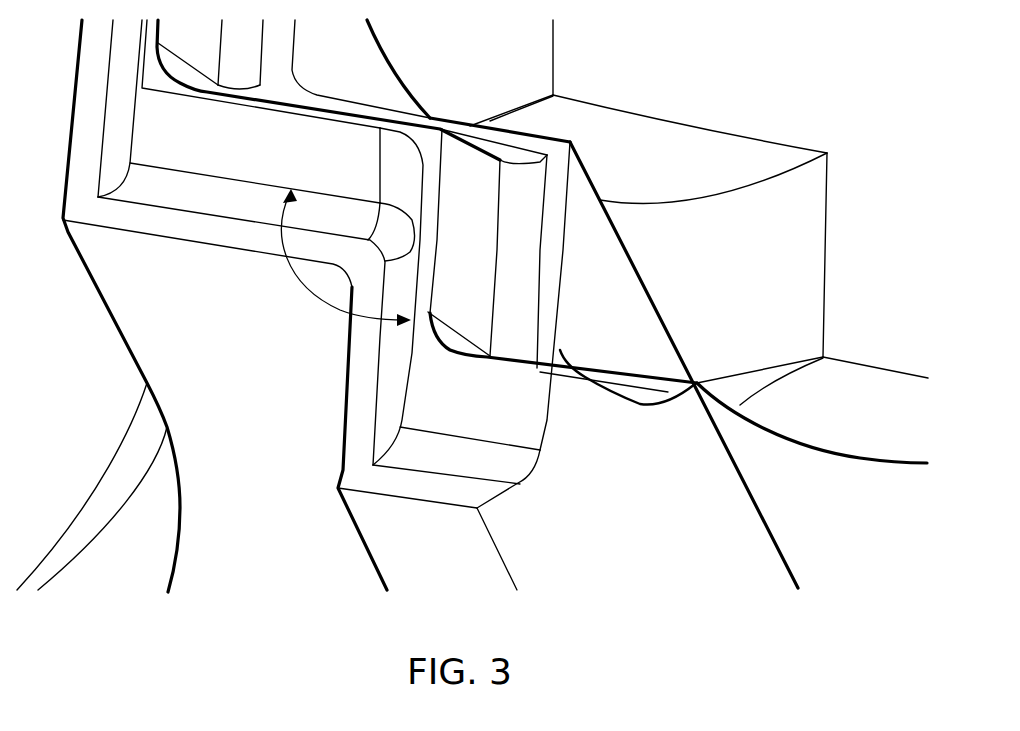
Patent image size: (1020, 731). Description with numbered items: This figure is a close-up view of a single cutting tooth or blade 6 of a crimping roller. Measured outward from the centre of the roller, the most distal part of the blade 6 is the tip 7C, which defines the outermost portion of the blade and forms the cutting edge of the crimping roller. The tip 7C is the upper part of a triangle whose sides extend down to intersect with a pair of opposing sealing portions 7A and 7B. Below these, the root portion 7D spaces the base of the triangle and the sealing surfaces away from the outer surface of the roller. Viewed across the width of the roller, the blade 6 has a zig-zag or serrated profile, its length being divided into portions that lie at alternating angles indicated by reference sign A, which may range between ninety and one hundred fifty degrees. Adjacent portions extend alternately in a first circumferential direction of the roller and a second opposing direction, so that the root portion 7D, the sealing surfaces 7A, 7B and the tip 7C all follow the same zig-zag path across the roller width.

The blade 6 is at (577, 397).
The sealing portion 7A is at (665, 398).
The sealing portion 7B is at (503, 468).
The tip 7C is at (560, 352).
The root portion 7D is at (697, 555).
The angle A is at (344, 257).